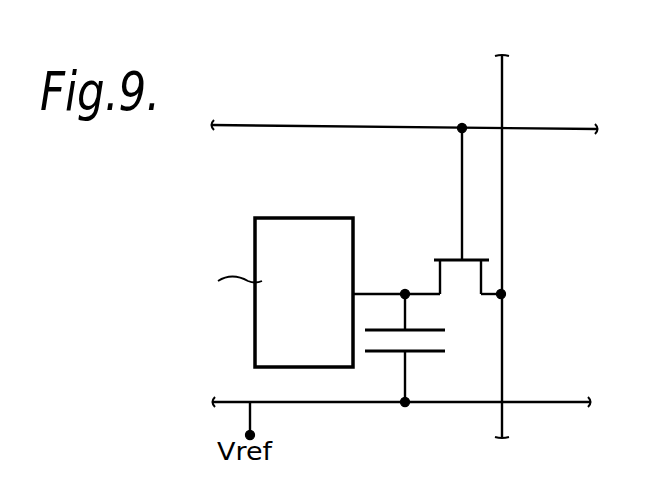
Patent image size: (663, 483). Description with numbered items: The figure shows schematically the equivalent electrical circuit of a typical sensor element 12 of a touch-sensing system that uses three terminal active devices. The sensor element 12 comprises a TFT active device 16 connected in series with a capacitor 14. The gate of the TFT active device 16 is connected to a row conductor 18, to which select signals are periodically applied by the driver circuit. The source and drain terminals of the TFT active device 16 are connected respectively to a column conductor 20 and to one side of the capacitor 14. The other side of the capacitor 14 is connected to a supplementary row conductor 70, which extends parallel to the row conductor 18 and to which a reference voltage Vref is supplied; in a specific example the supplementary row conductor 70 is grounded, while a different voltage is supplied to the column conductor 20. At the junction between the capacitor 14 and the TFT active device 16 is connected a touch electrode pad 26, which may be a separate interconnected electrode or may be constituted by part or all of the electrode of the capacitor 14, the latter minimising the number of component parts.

The sensor element 12 is at (308, 188).
The capacitor 14 is at (418, 352).
The TFT active device 16 is at (447, 258).
The row conductor 18 is at (545, 128).
The column conductor 20 is at (504, 78).
The touch electrode pad 26 is at (322, 305).
The supplementary row conductor 70 is at (547, 405).